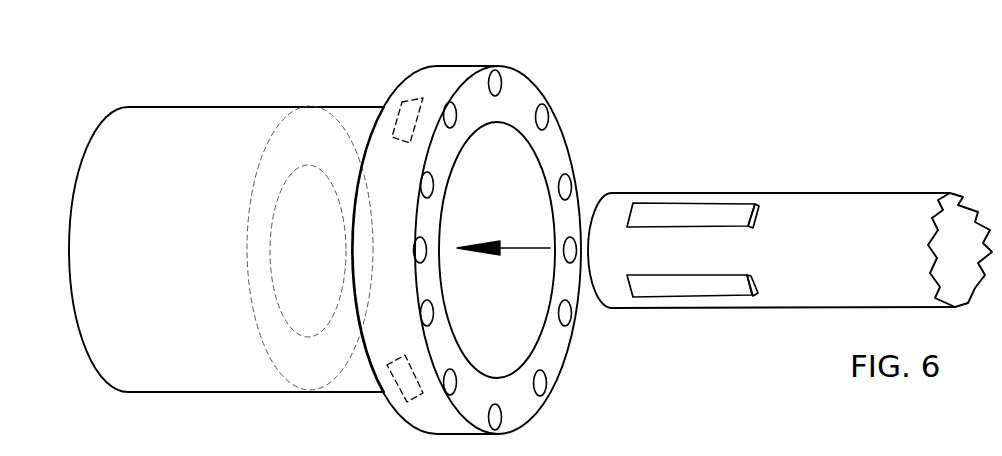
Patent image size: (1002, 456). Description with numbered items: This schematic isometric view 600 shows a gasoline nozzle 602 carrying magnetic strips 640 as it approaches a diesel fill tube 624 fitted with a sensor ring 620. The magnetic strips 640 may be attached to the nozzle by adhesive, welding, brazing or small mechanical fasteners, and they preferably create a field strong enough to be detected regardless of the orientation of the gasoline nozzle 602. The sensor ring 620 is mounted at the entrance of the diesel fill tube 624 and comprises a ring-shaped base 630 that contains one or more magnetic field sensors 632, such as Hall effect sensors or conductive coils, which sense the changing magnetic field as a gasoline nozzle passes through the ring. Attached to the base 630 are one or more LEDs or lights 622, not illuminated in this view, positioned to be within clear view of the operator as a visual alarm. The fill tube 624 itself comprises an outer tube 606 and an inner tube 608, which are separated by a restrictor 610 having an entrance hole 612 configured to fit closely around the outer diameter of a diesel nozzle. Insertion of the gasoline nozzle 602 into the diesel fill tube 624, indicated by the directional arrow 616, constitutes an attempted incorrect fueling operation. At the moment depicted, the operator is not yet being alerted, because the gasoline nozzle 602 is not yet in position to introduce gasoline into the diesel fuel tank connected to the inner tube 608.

The schematic isometric view 600 is at (780, 146).
The gasoline nozzle 602 is at (790, 221).
The outer tube 606 is at (353, 380).
The inner tube 608 is at (172, 377).
The restrictor 610 is at (300, 353).
The entrance hole 612 is at (310, 187).
The directional arrow 616 is at (520, 245).
The sensor ring 620 is at (522, 408).
The LEDs or lights 622 is at (573, 320).
The diesel fill tube 624 is at (510, 152).
The ring-shaped base 630 is at (447, 77).
The magnetic field sensors 632 is at (410, 113).
The magnetic strips 640 is at (727, 213).